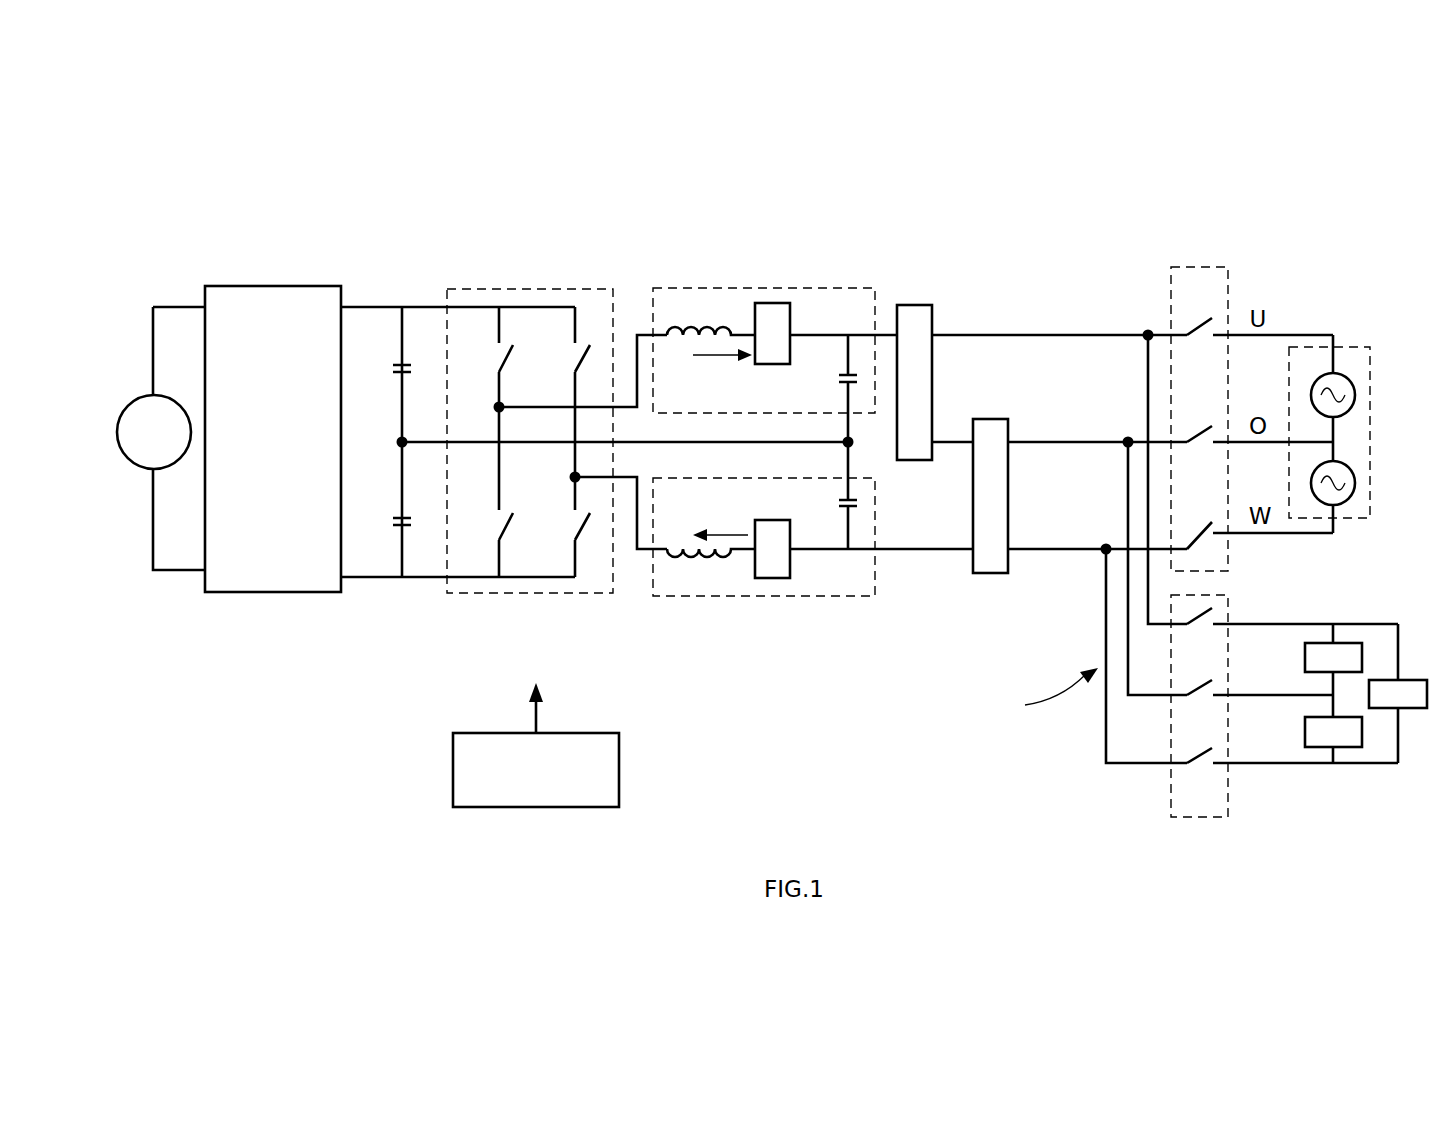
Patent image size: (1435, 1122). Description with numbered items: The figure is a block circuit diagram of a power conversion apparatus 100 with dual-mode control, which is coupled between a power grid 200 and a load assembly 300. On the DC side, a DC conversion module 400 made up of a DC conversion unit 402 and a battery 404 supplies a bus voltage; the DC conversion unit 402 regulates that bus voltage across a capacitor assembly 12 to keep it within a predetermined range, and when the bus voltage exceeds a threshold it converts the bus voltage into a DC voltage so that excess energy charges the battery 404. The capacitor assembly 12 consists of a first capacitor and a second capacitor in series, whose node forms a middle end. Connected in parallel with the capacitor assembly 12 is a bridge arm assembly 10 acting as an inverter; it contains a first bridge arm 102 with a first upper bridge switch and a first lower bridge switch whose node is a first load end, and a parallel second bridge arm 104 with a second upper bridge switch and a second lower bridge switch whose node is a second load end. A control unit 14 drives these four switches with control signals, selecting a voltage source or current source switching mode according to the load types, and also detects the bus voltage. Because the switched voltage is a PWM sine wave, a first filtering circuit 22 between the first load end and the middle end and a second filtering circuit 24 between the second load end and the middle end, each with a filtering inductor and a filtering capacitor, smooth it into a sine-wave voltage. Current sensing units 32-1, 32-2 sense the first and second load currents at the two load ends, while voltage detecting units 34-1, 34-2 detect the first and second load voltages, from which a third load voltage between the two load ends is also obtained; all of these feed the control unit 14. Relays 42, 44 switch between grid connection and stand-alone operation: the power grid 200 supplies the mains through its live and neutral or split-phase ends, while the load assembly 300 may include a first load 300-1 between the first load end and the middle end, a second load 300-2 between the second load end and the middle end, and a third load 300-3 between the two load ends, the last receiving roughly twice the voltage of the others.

The power conversion apparatus 100 is at (693, 210).
The bridge arm assembly 10 is at (542, 402).
The first bridge arm 102 is at (478, 322).
The second bridge arm 104 is at (560, 322).
The capacitor assembly 12 is at (382, 335).
The control unit 14 is at (603, 768).
The first filtering circuit 22 is at (775, 319).
The second filtering circuit 24 is at (813, 565).
The current sensing unit 32-1 is at (772, 318).
The current sensing unit 32-2 is at (772, 560).
The voltage detecting unit 34-1 is at (913, 300).
The voltage detecting unit 34-2 is at (990, 570).
The relay 42 is at (1192, 275).
The relay 44 is at (1200, 817).
The power grid 200 is at (1366, 288).
The load assembly 300 is at (1329, 740).
The first load 300-1 is at (1310, 655).
The second load 300-2 is at (1312, 733).
The third load 300-3 is at (1412, 690).
The DC conversion module 400 is at (219, 346).
The DC conversion unit 402 is at (272, 313).
The battery 404 is at (132, 381).